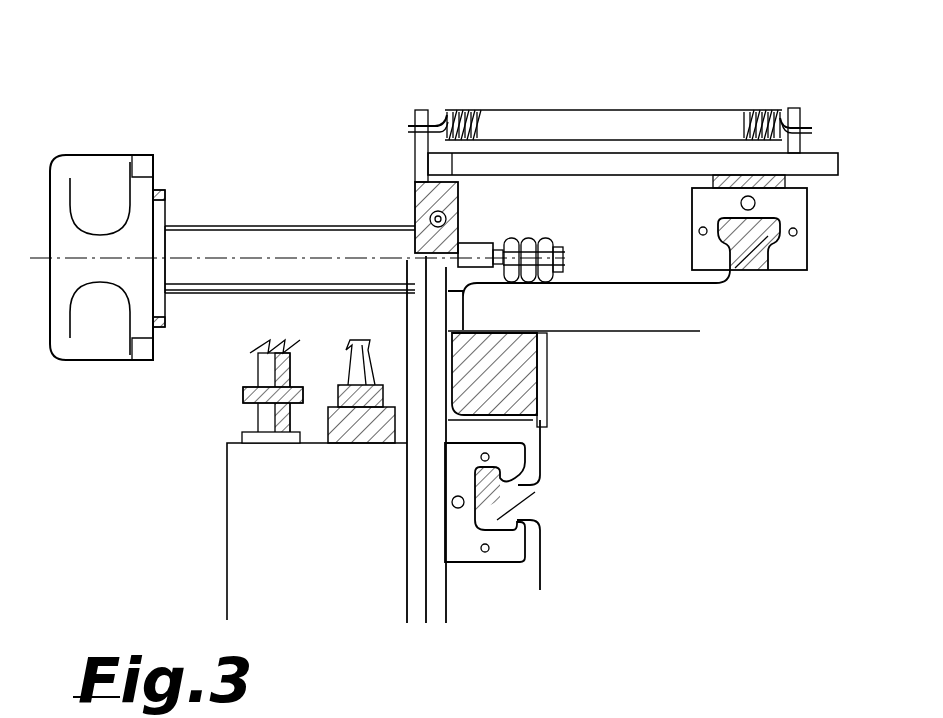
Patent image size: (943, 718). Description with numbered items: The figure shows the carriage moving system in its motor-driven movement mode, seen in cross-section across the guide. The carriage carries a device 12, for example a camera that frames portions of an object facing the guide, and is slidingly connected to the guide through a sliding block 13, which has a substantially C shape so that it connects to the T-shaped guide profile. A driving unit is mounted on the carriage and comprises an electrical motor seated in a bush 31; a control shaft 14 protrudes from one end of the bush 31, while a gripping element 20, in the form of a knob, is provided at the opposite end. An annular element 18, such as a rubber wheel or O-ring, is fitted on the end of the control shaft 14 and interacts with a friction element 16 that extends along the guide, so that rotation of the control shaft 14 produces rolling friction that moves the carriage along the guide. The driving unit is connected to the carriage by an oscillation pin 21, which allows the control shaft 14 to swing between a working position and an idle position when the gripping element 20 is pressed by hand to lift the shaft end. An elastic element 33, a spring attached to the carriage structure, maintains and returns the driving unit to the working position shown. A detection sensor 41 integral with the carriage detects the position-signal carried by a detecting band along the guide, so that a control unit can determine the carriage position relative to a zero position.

The device 12 is at (330, 556).
The sliding block 13 is at (808, 240).
The control shaft 14 is at (478, 243).
The friction element 16 is at (598, 284).
The annular element 18 is at (532, 238).
The gripping element 20 is at (92, 153).
The oscillation pin 21 is at (430, 219).
The bush 31 is at (232, 225).
The elastic element 33 is at (580, 108).
The detection sensor 41 is at (528, 372).